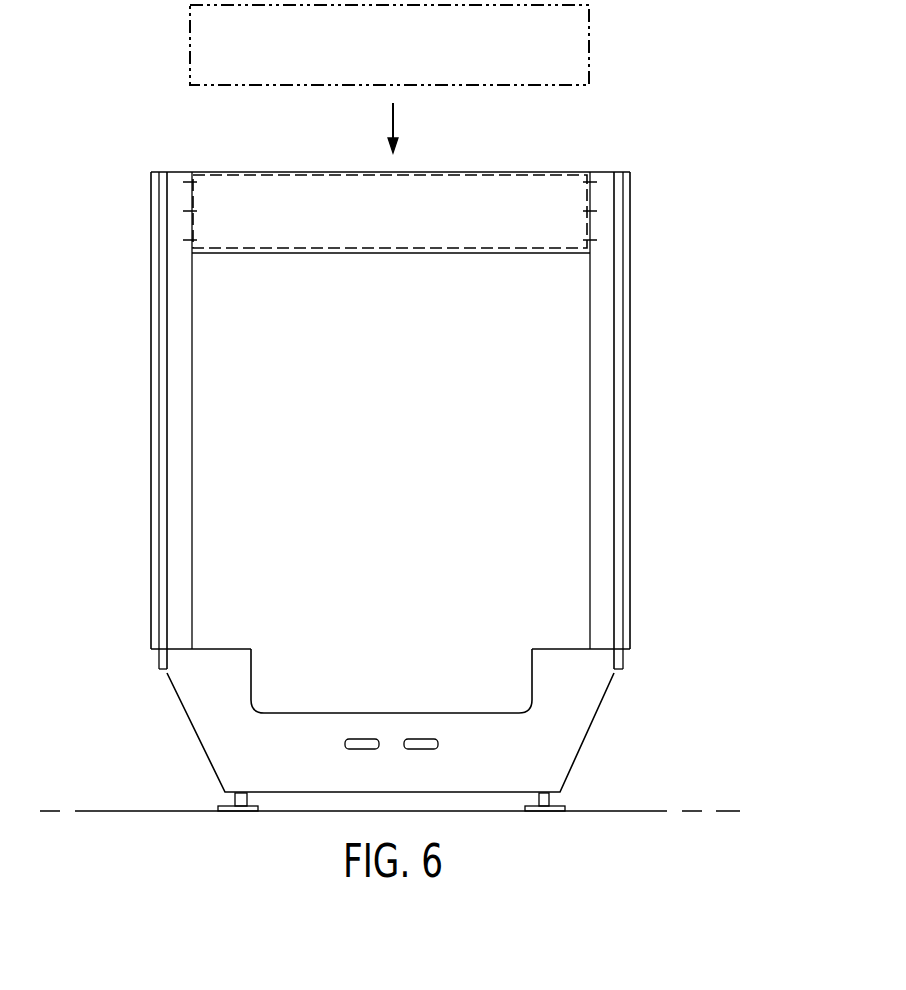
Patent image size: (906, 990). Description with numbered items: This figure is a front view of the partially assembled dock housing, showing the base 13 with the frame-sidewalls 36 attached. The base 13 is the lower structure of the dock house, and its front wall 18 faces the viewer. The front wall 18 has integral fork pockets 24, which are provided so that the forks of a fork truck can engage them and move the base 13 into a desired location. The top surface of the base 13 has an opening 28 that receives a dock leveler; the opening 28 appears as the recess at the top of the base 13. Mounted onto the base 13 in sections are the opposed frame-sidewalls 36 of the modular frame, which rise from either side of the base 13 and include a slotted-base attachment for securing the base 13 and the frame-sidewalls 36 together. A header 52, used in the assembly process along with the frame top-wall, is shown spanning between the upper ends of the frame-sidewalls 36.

The base 13 is at (570, 719).
The front wall 18 is at (552, 757).
The fork pockets 24 is at (427, 740).
The opening 28 is at (503, 682).
The frame-sidewalls 36 is at (172, 490).
The header 52 is at (520, 199).